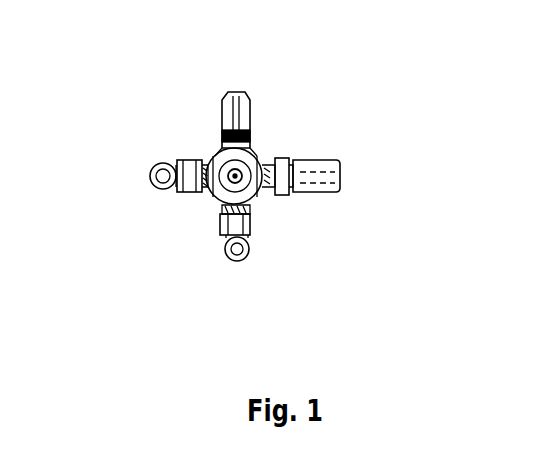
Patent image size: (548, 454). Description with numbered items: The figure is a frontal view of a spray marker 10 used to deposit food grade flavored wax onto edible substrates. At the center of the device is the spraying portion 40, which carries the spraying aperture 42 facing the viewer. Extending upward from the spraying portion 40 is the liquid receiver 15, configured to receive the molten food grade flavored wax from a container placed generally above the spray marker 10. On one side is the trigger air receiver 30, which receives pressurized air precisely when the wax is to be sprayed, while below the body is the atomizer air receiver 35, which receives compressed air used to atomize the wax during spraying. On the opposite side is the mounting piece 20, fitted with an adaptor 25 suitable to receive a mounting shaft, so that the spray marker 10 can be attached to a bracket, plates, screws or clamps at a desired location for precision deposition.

The spray marker 10 is at (170, 72).
The liquid receiver 15 is at (243, 93).
The mounting piece 20 is at (298, 140).
The adaptor 25 is at (310, 192).
The trigger air receiver 30 is at (152, 163).
The atomizer air receiver 35 is at (243, 258).
The spraying portion 40 is at (228, 186).
The spraying aperture 42 is at (240, 175).